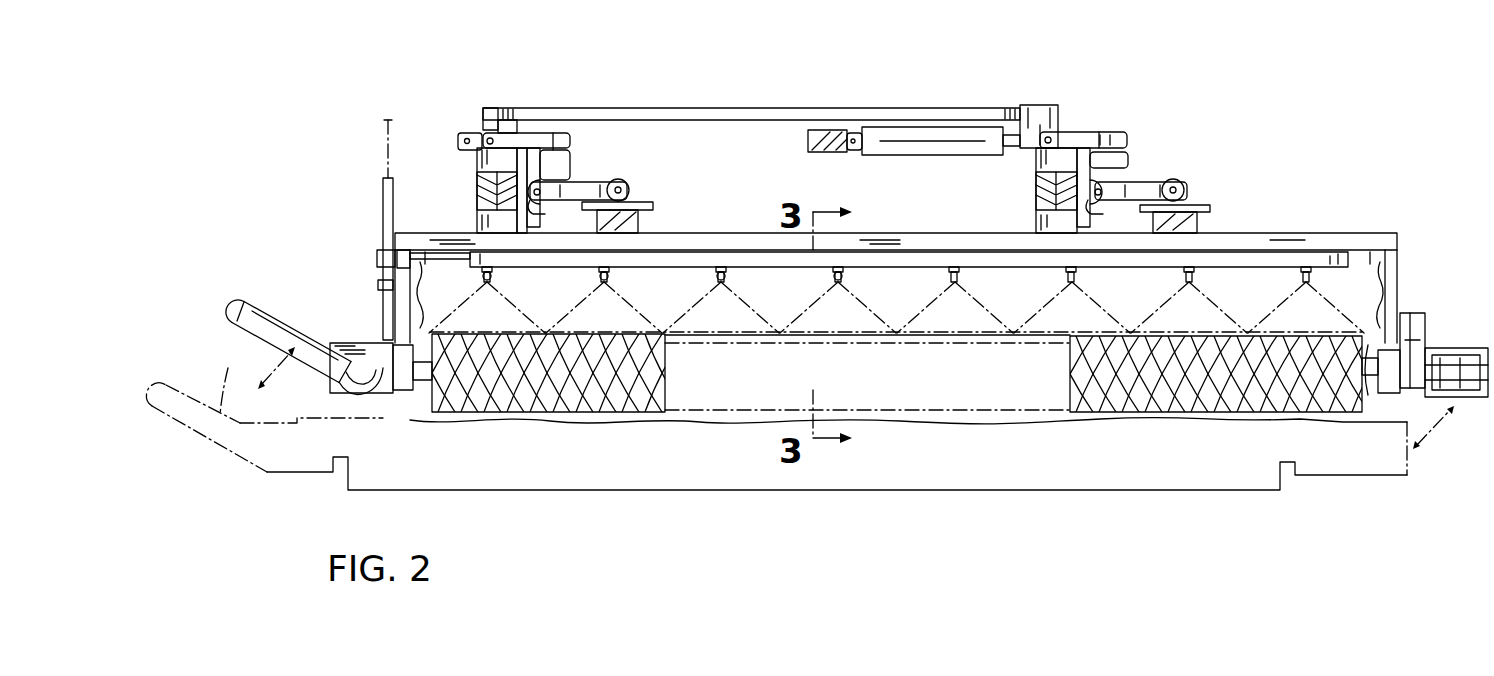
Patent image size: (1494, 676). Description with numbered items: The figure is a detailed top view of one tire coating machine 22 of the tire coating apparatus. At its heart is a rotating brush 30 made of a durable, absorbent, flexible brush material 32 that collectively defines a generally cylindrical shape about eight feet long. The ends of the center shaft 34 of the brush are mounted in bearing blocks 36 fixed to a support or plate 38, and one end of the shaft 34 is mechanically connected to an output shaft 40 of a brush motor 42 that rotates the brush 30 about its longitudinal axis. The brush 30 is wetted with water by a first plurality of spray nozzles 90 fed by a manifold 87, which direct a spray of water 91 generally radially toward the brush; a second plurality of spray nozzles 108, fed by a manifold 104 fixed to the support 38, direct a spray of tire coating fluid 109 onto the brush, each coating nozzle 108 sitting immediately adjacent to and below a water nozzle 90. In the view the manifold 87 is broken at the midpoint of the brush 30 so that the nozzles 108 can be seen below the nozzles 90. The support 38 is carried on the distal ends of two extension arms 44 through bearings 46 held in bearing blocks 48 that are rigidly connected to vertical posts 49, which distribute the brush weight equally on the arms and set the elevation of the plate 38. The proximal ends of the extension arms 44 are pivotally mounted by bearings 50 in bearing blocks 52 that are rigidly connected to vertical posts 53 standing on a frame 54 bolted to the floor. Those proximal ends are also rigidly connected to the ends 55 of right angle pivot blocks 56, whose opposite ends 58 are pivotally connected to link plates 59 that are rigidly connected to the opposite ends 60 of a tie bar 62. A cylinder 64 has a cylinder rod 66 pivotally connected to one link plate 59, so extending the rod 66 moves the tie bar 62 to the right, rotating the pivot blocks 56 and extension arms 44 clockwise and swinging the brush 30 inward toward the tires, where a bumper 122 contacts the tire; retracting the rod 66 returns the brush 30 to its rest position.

The coating machine 22 is at (608, 520).
The rotating brush 30 is at (649, 420).
The brush material 32 is at (1152, 413).
The center shaft 34 is at (421, 398).
The bearing blocks 36 is at (400, 398).
The support or plate 38 is at (1402, 240).
The output shaft 40 is at (1425, 348).
The brush motor 42 is at (1466, 398).
The extension arms 44 is at (595, 178).
The bearings 46 is at (629, 190).
The bearing blocks 48 is at (655, 204).
The vertical posts 49 is at (640, 221).
The bearings 50 is at (533, 197).
The bearing blocks 52 is at (545, 178).
The vertical posts 53 is at (477, 190).
The frame 54 is at (476, 165).
The ends of pivot blocks 55 is at (572, 165).
The right angle pivot blocks 56 is at (556, 143).
The opposite ends of pivot blocks 58 is at (515, 133).
The link plates 59 is at (482, 130).
The ends of tie bar 60 is at (503, 107).
The tie bar 62 is at (814, 72).
The cylinder 64 is at (893, 160).
The cylinder rod 66 is at (1014, 150).
The manifold 87 is at (480, 268).
The spray nozzles 90 is at (598, 279).
The spray of water 91 is at (650, 318).
The manifold 104 is at (1280, 256).
The spray nozzles 108 is at (1066, 279).
The spray of tire coating fluid 109 is at (1349, 303).
The bumper 122 is at (268, 342).